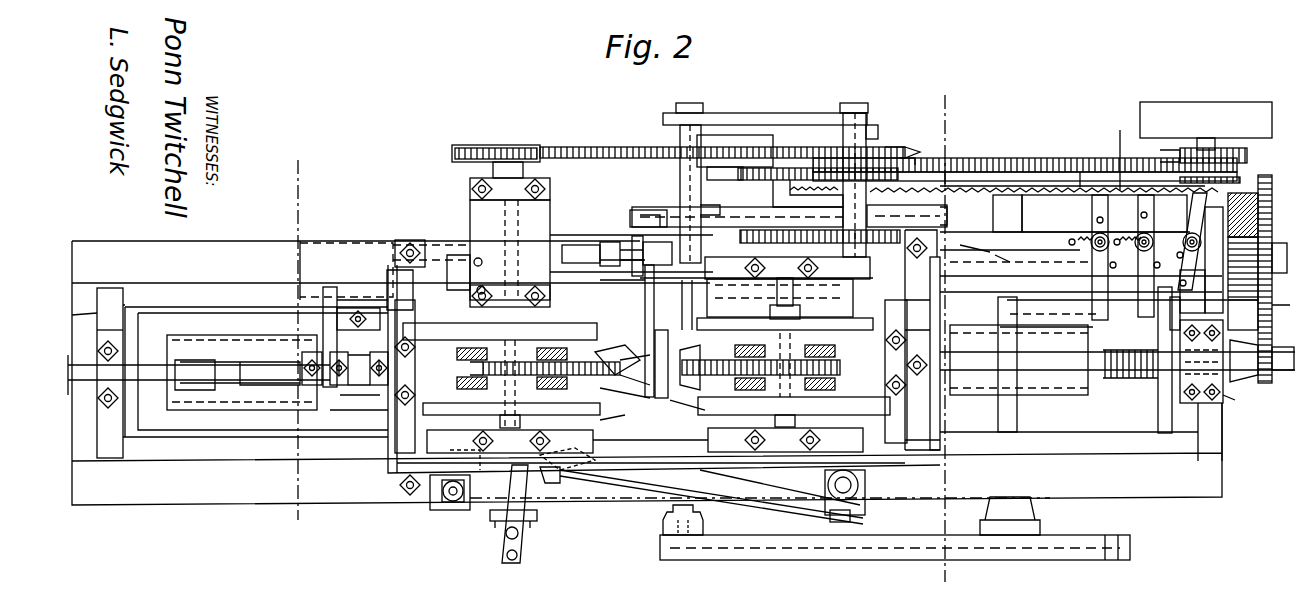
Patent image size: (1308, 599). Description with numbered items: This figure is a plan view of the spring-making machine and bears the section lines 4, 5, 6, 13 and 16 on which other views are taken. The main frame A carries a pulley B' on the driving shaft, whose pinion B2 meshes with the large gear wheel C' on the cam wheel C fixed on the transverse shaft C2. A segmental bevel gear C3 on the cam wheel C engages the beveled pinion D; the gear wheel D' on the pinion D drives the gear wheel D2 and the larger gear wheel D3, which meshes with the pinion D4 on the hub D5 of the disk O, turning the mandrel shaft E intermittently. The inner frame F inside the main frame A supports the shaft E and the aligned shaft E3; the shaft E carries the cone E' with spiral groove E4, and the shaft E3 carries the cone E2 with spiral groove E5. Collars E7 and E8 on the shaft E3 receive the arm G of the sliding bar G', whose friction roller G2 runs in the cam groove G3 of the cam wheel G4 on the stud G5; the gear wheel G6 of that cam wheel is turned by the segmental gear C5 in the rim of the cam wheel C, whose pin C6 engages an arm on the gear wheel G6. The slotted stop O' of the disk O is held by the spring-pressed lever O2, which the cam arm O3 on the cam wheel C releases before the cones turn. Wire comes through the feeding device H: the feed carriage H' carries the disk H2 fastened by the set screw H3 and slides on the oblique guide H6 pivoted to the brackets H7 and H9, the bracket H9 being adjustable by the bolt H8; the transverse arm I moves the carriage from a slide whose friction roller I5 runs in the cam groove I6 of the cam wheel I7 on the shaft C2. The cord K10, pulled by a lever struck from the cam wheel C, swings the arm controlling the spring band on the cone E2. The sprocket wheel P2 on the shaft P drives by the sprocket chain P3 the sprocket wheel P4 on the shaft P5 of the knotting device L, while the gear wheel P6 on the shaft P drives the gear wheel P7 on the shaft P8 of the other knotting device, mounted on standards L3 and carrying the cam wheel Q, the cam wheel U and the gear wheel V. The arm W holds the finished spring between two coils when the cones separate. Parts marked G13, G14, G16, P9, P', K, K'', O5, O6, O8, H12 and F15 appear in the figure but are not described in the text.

The main frame A is at (647, 373).
The frame F is at (225, 278).
The shaft E3 is at (199, 372).
The section line 4— 4 is at (684, 307).
The collar E8 is at (108, 326).
The arm G is at (321, 320).
The section line 5— 5 is at (302, 337).
The collar E7 is at (344, 351).
The spiral groove E5 is at (341, 386).
The spiral groove E4 is at (372, 386).
The section line 13— 13 is at (975, 408).
The bar G' is at (586, 257).
The cam wheel G4 is at (602, 234).
The arm G14 is at (645, 236).
The arm G13 is at (648, 202).
The pawl G16 is at (700, 205).
The friction roller G2 is at (680, 240).
The shaft P5 is at (505, 226).
The sprocket wheel P4 is at (520, 147).
The sprocket chain P3 is at (590, 147).
The cross bar P9 is at (740, 135).
The shaft P is at (865, 182).
The sprocket wheel P2 is at (900, 147).
The rack end P' is at (921, 152).
The stud G5 is at (818, 166).
The gear wheel G6 is at (832, 194).
The cam wheel C is at (1025, 159).
The gear wheel C' is at (1083, 155).
The segmental gear wheel C5 is at (945, 165).
The cam arm O3 is at (1122, 144).
The section line 6— 6 is at (964, 345).
The gear wheel P7 is at (766, 225).
The cam groove G3 is at (907, 216).
The gear wheel P6 is at (947, 216).
The cam wheel U is at (646, 339).
The post K is at (770, 340).
The cam wheel Q is at (590, 335).
The spring-forming cone E2 is at (538, 384).
The arm W is at (619, 356).
The mandrel shaft E is at (837, 359).
The knotting device L is at (760, 351).
The shaft P8 is at (772, 352).
The standards L3 is at (625, 398).
The gear wheel D' is at (984, 316).
The gear wheel V is at (612, 420).
The disk H2 is at (595, 450).
The set screw H3 is at (760, 495).
The guide H6 is at (740, 500).
The bracket H7 is at (825, 482).
The friction roller I5 is at (663, 525).
The cam groove I6 is at (740, 560).
The cam wheel I7 is at (1010, 560).
The transverse arm I is at (537, 518).
The bolt H8 is at (503, 533).
The bracket H9 is at (452, 510).
The feed carriage H' is at (522, 490).
The cord K10 is at (1081, 279).
The rail K'' is at (972, 258).
The feeding device H is at (1002, 250).
The shaft C2 is at (1019, 260).
The segmental bevel gear wheel C3 is at (1092, 313).
The lever O6 is at (1095, 262).
The pin O8 is at (1063, 252).
The lever O2 is at (1141, 256).
The lever H12 is at (1200, 253).
The slotted stop O' is at (1150, 313).
The pulley B' is at (1206, 116).
The pinion B2 is at (1247, 158).
The pin C6 is at (1240, 178).
The beveled pinion D is at (1261, 279).
The gear wheel D2 is at (1267, 268).
The gear wheel D3 is at (1272, 300).
The hub D5 is at (1216, 360).
The pinion D4 is at (1258, 385).
The spring-forming cone E' is at (1286, 343).
The bracket F15 is at (1238, 402).
The spring O5 is at (1123, 380).
The disk O is at (1155, 360).
The section line 16— 16 is at (929, 437).